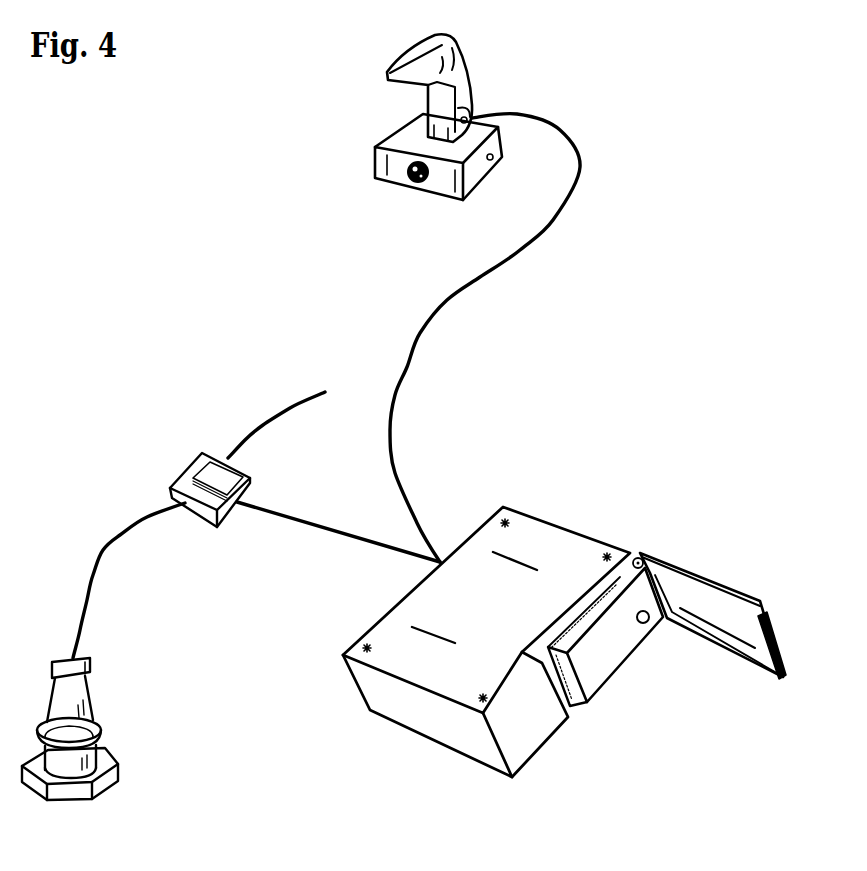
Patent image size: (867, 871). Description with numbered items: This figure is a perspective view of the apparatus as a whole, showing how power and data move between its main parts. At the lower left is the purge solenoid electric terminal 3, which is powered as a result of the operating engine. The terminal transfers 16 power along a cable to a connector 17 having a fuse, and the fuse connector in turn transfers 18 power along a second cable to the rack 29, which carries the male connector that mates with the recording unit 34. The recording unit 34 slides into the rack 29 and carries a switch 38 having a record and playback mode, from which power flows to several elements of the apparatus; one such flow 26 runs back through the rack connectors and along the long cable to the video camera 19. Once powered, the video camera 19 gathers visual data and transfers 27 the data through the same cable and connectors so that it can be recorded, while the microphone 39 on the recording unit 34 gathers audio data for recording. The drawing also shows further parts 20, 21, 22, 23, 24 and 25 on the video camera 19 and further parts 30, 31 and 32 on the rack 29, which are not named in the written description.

The purge solenoid electric terminal 3 is at (101, 735).
The power transfer 16 is at (260, 427).
The connector 17 is at (173, 473).
The power transfer 18 is at (302, 530).
The video camera 19 is at (370, 155).
The camera lens 20 is at (415, 187).
The hook neck 21 is at (420, 107).
The hook head 22 is at (434, 80).
The hook curved back 23 is at (434, 88).
The pivot hole 24 is at (470, 118).
The housing hole 25 is at (493, 158).
The power flow 26 is at (485, 338).
The data transfer 27 is at (413, 363).
The rack 29 is at (563, 518).
The hinged lid 30 is at (717, 577).
The lid latch 31 is at (783, 630).
The housing screw 32 is at (355, 643).
The recording unit 34 is at (630, 663).
The switch 38 is at (652, 622).
The microphone 39 is at (583, 653).